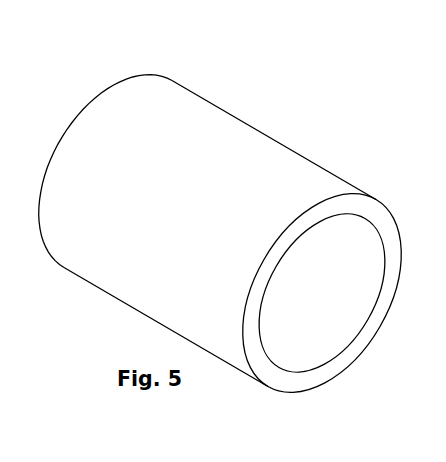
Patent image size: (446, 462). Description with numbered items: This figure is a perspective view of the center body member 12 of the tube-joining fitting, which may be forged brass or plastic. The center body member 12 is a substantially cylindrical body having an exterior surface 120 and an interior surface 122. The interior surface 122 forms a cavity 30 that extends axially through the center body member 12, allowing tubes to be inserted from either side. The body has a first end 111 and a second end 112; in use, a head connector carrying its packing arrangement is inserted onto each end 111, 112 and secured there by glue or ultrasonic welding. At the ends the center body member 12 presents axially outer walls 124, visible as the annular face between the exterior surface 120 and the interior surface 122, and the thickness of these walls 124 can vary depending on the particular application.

The center body member 12 is at (237, 230).
The cavity 30 is at (325, 293).
The first end 111 is at (174, 59).
The second end 112 is at (323, 291).
The exterior surface 120 is at (254, 144).
The interior surface 122 is at (293, 357).
The axially outer wall 124 is at (278, 390).